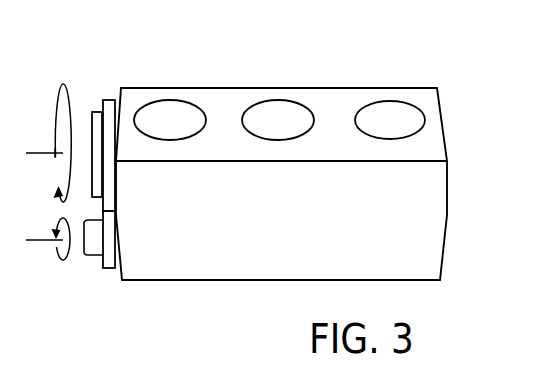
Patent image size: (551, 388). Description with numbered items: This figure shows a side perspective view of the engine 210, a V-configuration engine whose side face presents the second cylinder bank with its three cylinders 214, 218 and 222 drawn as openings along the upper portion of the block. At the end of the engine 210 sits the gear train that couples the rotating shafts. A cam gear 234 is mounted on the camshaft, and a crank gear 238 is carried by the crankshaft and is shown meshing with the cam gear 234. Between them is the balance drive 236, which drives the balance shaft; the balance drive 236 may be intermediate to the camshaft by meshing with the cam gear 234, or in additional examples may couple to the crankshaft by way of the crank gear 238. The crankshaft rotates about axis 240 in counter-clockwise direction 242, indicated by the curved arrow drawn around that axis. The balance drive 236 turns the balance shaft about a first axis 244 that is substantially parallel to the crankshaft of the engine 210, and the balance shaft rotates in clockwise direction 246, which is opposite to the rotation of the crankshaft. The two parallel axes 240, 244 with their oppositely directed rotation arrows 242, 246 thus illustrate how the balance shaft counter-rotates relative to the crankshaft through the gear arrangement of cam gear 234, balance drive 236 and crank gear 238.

The engine 210 is at (297, 55).
The cylinder 214 is at (404, 129).
The cylinder 218 is at (292, 129).
The cylinder 222 is at (184, 129).
The cam gear 234 is at (110, 98).
The balance drive 236 is at (97, 110).
The crank gear 238 is at (107, 270).
The axis 240 is at (45, 243).
The counter-clockwise direction 242 is at (72, 261).
The first axis 244 is at (42, 151).
The clockwise direction 246 is at (56, 100).